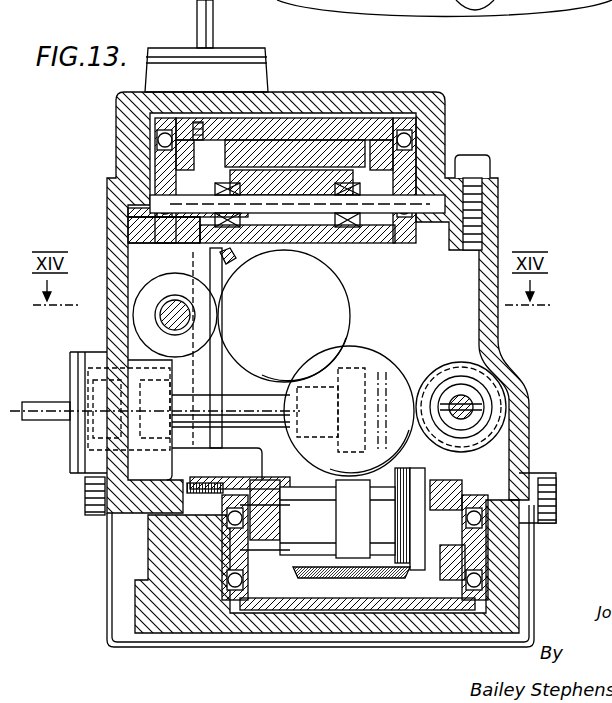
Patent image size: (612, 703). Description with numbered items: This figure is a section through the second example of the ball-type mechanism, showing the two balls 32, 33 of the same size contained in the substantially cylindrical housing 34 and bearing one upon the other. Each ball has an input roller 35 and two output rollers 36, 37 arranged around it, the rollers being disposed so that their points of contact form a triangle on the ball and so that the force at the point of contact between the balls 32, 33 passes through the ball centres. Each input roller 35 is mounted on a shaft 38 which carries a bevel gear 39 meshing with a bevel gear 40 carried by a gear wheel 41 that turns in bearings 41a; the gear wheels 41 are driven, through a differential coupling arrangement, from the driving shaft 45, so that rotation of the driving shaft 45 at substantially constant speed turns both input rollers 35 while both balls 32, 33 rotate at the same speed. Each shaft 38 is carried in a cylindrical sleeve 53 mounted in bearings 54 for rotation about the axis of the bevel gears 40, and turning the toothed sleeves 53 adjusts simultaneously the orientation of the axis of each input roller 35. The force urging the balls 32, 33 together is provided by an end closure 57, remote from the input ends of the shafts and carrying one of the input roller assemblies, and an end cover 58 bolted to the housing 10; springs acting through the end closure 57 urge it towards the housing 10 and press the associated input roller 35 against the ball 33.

The housing 10 is at (400, 12).
The ball 32 is at (294, 328).
The ball 33 is at (388, 372).
The cylindrical housing 34 is at (496, 330).
The input roller 35 is at (276, 245).
The output roller 36 is at (153, 291).
The output roller 37 is at (356, 366).
The shaft 38 is at (330, 245).
The bevel gear 39 is at (228, 262).
The bevel gear 40 is at (355, 137).
The gear wheel 41 is at (336, 116).
The bearings 41a is at (408, 136).
The driving shaft 45 is at (213, 24).
The cylindrical sleeve 53 is at (388, 245).
The bearings 54 is at (416, 196).
The end closure 57 is at (506, 606).
The end cover 58 is at (296, 648).